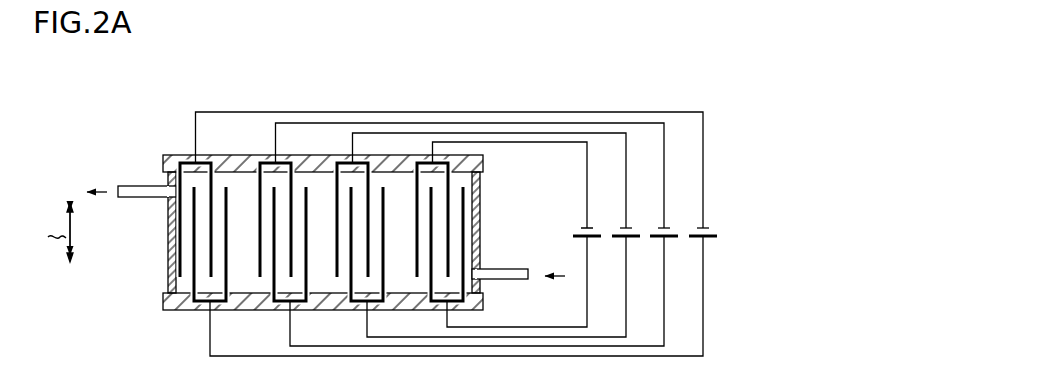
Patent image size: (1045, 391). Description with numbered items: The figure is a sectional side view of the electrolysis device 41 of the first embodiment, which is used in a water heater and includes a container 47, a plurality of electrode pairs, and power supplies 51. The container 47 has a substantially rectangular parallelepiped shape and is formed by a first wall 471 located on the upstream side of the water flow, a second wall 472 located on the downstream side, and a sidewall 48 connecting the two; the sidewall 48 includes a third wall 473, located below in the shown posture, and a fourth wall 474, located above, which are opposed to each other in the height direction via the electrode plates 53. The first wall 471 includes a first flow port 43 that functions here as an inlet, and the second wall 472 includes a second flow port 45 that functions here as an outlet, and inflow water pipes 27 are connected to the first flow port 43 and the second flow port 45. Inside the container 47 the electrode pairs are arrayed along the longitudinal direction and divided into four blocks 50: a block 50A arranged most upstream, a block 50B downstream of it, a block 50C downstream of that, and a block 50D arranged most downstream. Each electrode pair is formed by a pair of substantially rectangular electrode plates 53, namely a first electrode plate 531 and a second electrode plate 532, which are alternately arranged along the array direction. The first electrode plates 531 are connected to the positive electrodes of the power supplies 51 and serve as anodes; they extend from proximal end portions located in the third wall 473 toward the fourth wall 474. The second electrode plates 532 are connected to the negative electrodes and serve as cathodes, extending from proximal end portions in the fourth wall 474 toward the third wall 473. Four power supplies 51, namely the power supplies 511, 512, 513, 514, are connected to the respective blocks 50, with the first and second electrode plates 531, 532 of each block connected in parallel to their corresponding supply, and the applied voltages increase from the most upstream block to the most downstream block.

The electrolysis device 41 is at (100, 69).
The container 47 is at (173, 150).
The sidewall 48 is at (323, 228).
The fourth wall 474 is at (315, 157).
The third wall 473 is at (248, 308).
The second wall 472 is at (172, 268).
The first wall 471 is at (478, 215).
The inflow water pipe 27 is at (165, 190).
The second flow port 45 is at (155, 200).
The first flow port 43 is at (477, 273).
The block 50 is at (430, 209).
The block 50A is at (456, 182).
The block 50B is at (377, 185).
The block 50C is at (298, 184).
The block 50D is at (220, 184).
The electrode plate 53 is at (457, 277).
The first electrode plate 531 is at (355, 278).
The second electrode plate 532 is at (334, 250).
The power supply 51 is at (796, 253).
The power supply 511 is at (597, 255).
The power supply 512 is at (635, 255).
The power supply 513 is at (680, 255).
The power supply 514 is at (719, 255).